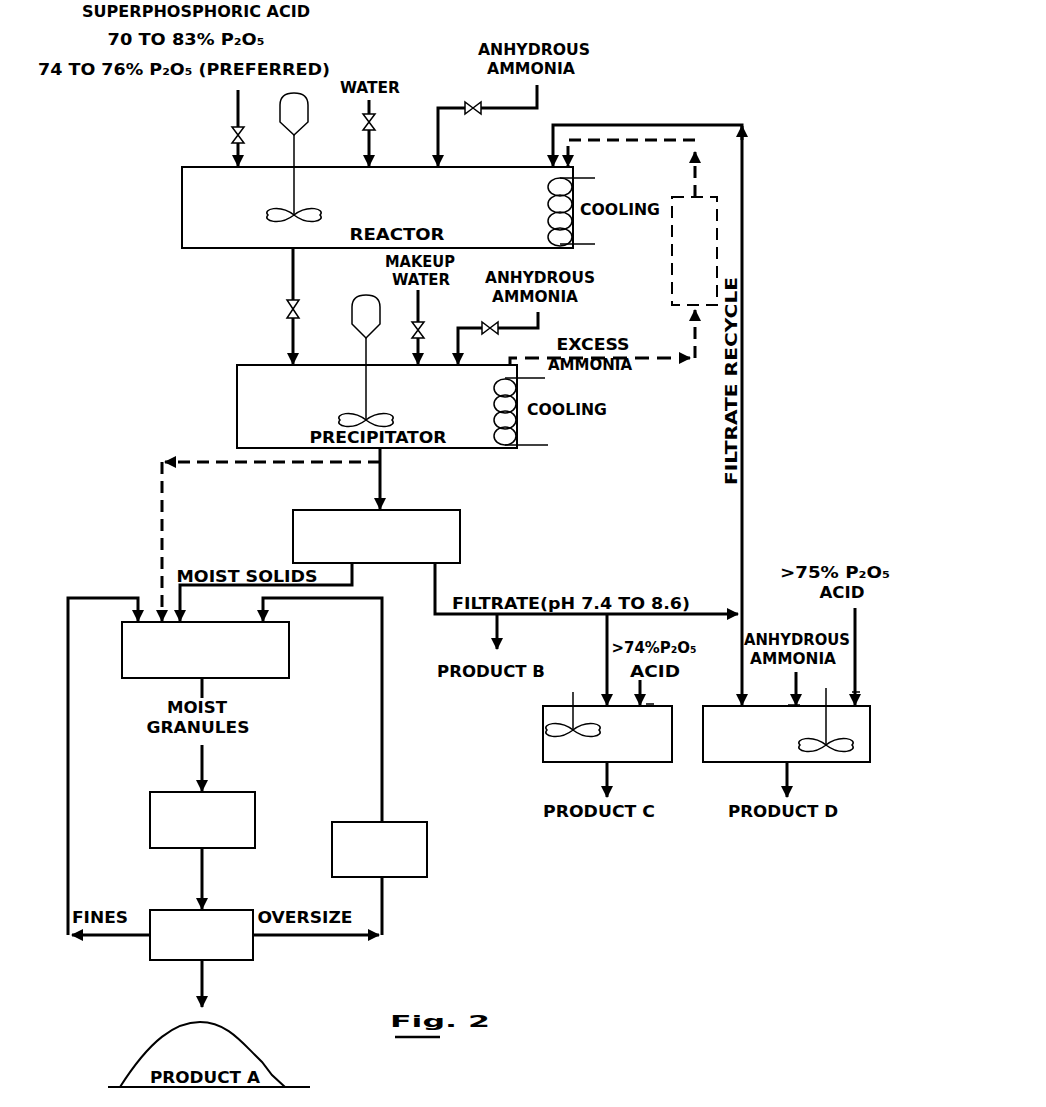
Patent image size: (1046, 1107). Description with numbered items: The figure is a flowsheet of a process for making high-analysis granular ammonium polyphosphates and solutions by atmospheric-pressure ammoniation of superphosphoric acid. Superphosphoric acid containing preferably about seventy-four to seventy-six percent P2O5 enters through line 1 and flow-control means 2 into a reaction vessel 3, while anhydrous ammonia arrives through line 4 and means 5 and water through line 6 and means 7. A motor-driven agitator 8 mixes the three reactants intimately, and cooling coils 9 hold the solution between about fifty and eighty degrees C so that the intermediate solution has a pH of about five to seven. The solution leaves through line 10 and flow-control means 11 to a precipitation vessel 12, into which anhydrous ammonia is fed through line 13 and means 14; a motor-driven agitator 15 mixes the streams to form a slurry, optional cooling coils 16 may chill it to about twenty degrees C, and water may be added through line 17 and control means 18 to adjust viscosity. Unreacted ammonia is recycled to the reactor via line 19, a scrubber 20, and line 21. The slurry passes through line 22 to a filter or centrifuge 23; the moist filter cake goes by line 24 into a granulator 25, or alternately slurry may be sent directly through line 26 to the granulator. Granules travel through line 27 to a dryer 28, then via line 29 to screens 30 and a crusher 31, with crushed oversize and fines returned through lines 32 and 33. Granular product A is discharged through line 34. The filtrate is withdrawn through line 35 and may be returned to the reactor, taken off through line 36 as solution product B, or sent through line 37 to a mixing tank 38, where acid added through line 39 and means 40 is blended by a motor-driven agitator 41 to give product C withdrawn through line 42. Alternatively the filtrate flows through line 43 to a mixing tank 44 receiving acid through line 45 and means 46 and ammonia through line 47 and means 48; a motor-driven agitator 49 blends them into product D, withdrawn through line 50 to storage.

The line 1 is at (223, 128).
The means for controlling the rate of flow 2 is at (222, 134).
The reaction vessel 3 is at (358, 207).
The line 4 is at (487, 125).
The means for controlling the rate of flow 5 is at (463, 93).
The line 6 is at (387, 131).
The means for controlling the rate of flow 7 is at (384, 129).
The motor-driven agitator 8 is at (296, 157).
The cooling coils 9 is at (588, 195).
The line 10 is at (265, 306).
The means for controlling the rate of flow 11 is at (268, 309).
The precipitation vessel 12 is at (353, 406).
The line 13 is at (600, 347).
The means for controlling the rate of flow 14 is at (482, 328).
The motor-driven agitator 15 is at (372, 361).
The cooling coils 16 is at (530, 427).
The line 17 is at (399, 326).
The means of control 18 is at (434, 328).
The line 19 is at (670, 334).
The scrubber 20 is at (673, 251).
The line 21 is at (631, 168).
The line 22 is at (399, 478).
The filter or centrifuge 23 is at (347, 537).
The line 24 is at (283, 592).
The granulator 25 is at (225, 650).
The line 26 is at (238, 541).
The line 27 is at (227, 734).
The dryer 28 is at (219, 820).
The line 29 is at (226, 878).
The screens 30 is at (220, 945).
The crusher 31 is at (395, 860).
The line 32 is at (334, 766).
The line 33 is at (109, 766).
The line 34 is at (167, 983).
The line 35 is at (586, 588).
The line 36 is at (465, 631).
The line 37 is at (584, 659).
The mixing tank 38 is at (583, 734).
The line 39 is at (675, 687).
The means for controlling the rate of flow 40 is at (676, 696).
The motor-driven agitator 41 is at (562, 709).
The line 42 is at (625, 779).
The line 43 is at (647, 415).
The mixing tank 44 is at (784, 752).
The line 45 is at (872, 656).
The means for controlling the rate of flow 46 is at (871, 674).
The line 47 is at (771, 687).
The means for controlling the rate of flow 48 is at (773, 698).
The motor-driven agitator 49 is at (841, 738).
The line 50 is at (803, 779).